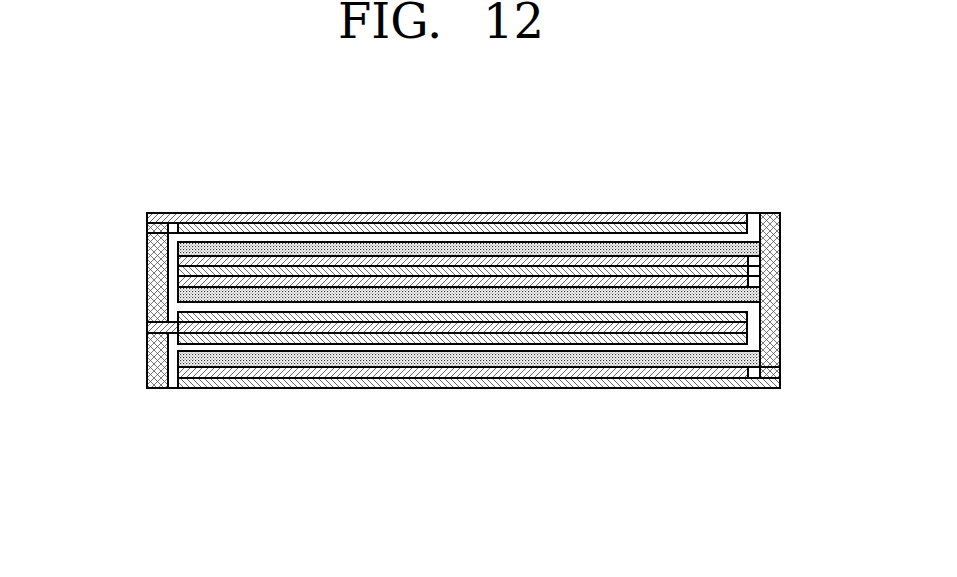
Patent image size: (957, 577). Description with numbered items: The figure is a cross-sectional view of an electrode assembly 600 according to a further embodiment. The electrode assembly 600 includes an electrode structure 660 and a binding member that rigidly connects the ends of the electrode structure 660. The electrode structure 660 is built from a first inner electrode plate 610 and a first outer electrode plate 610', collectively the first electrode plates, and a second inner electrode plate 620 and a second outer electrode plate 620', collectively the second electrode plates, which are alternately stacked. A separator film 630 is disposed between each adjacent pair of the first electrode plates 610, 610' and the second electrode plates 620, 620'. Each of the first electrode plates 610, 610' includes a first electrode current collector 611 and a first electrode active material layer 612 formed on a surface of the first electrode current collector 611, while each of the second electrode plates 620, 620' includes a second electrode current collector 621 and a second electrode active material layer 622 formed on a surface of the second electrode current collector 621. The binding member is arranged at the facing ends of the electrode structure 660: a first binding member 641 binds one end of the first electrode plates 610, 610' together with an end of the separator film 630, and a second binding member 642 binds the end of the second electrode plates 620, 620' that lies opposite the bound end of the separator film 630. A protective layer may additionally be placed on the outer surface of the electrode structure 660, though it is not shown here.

The electrode assembly 600 is at (783, 171).
The first inner electrode plate 610 is at (469, 197).
The first outer electrode plate 610' is at (479, 424).
The first electrode current collector 611 is at (348, 273).
The first electrode active material layer 612 is at (300, 262).
The second inner electrode plate 620 is at (462, 397).
The second outer electrode plate 620' is at (447, 170).
The second electrode current collector 621 is at (528, 218).
The second electrode active material layer 622 is at (590, 228).
The separator film 630 is at (705, 248).
The first binding member 641 is at (780, 225).
The second binding member 642 is at (158, 267).
The electrode structure 660 is at (180, 485).